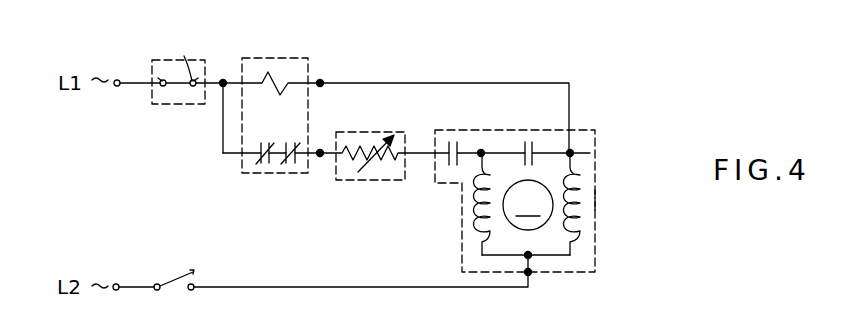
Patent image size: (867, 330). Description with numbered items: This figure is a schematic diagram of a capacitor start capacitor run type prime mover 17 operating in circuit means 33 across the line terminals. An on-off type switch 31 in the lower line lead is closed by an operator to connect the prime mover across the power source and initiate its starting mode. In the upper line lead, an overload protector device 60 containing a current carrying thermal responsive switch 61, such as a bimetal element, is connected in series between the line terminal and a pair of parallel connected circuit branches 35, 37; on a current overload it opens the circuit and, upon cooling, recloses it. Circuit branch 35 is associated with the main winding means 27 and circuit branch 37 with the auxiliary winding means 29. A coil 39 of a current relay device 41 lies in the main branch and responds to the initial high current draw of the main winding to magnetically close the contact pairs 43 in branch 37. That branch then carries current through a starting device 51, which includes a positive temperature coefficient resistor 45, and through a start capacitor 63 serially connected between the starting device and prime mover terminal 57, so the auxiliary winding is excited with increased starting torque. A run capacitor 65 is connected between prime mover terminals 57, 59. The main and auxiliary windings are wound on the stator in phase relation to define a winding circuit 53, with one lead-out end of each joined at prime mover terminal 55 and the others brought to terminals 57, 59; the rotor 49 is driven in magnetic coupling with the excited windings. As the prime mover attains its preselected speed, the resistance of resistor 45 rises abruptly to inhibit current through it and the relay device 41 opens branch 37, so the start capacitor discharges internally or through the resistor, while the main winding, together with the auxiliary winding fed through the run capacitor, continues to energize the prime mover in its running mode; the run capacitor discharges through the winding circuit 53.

The prime mover 17 is at (608, 128).
The main winding means 27 is at (582, 226).
The auxiliary winding means 29 is at (473, 221).
The on-off type switch 31 is at (186, 276).
The circuit means 33 is at (147, 179).
The circuit branch 35 is at (413, 83).
The circuit branch 37 is at (222, 125).
The coil 39 is at (278, 82).
The current relay device 41 is at (244, 58).
The contact pairs 43 is at (293, 168).
The positive temperature coefficient resistor 45 is at (371, 146).
The rotor 49 is at (528, 205).
The starting device 51 is at (336, 132).
The winding circuit 53 is at (595, 199).
The prime mover terminal 55 is at (530, 274).
The prime mover terminal 57 is at (481, 150).
The prime mover terminal 59 is at (590, 153).
The overload protector device 60 is at (148, 66).
The thermal responsive switch 61 is at (184, 56).
The start capacitor 63 is at (452, 141).
The run capacitor 65 is at (528, 141).